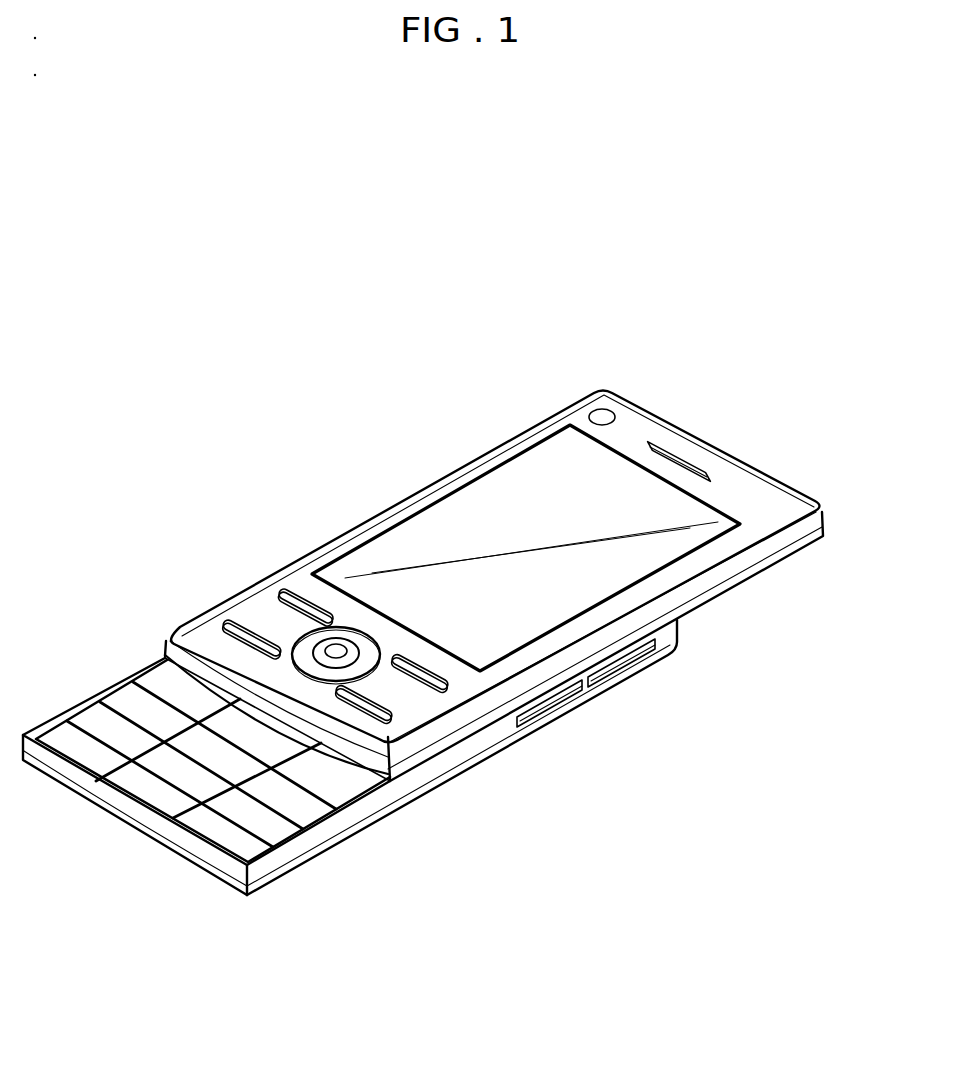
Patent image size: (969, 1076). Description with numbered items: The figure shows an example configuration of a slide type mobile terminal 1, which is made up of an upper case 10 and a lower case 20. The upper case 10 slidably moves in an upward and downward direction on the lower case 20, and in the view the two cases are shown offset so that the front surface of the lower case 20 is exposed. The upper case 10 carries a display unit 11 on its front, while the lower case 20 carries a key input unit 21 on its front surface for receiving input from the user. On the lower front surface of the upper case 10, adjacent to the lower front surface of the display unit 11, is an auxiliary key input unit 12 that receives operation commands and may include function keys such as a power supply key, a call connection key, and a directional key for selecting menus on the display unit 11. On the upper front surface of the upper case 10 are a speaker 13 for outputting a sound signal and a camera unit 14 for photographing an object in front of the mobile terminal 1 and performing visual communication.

The slide type mobile terminal 1 is at (259, 350).
The upper case 10 is at (821, 509).
The display unit 11 is at (478, 513).
The auxiliary key input unit 12 is at (305, 600).
The speaker 13 is at (680, 463).
The camera unit 14 is at (601, 414).
The lower case 20 is at (682, 635).
The key input unit 21 is at (220, 830).